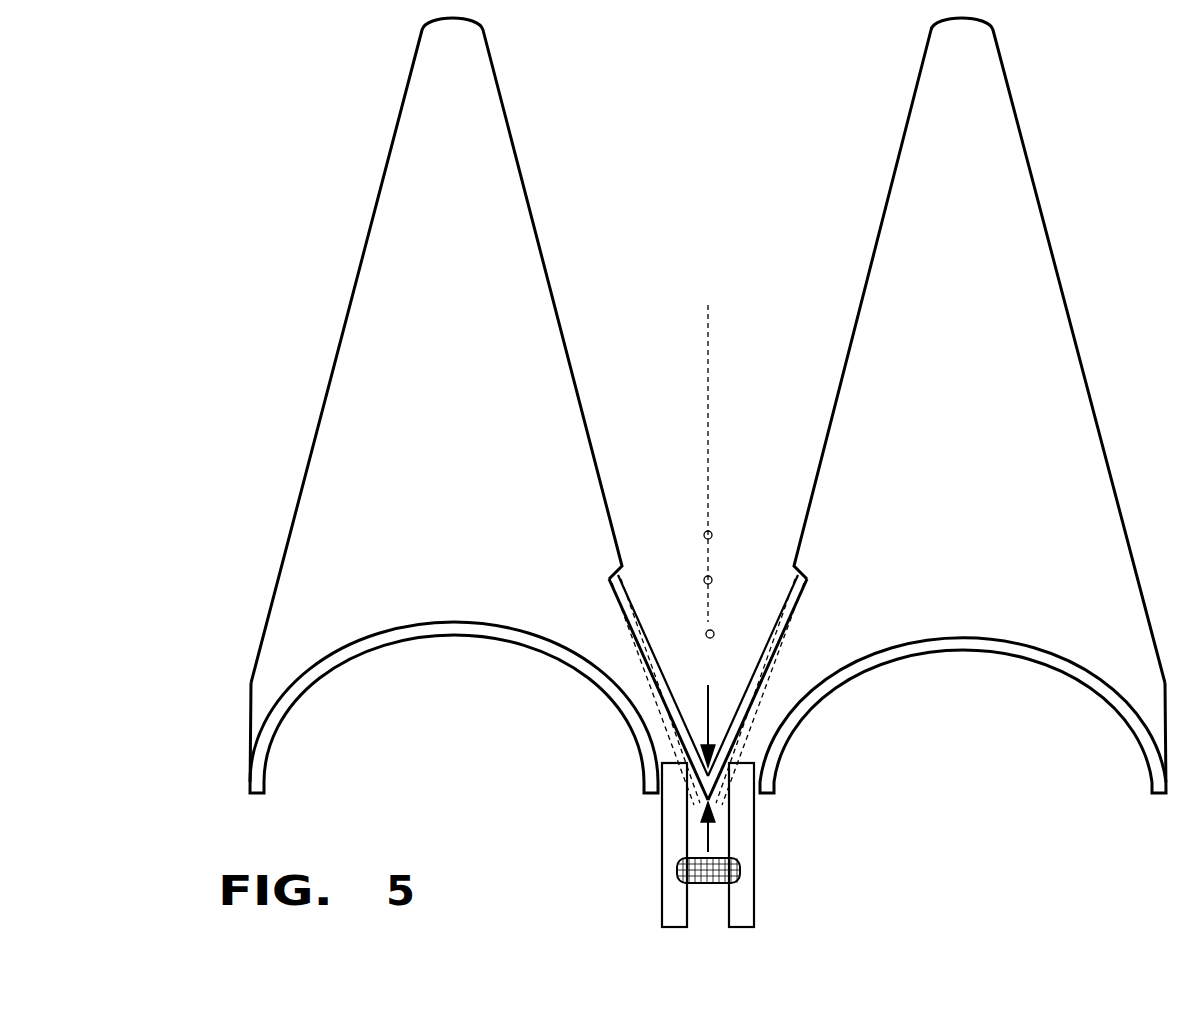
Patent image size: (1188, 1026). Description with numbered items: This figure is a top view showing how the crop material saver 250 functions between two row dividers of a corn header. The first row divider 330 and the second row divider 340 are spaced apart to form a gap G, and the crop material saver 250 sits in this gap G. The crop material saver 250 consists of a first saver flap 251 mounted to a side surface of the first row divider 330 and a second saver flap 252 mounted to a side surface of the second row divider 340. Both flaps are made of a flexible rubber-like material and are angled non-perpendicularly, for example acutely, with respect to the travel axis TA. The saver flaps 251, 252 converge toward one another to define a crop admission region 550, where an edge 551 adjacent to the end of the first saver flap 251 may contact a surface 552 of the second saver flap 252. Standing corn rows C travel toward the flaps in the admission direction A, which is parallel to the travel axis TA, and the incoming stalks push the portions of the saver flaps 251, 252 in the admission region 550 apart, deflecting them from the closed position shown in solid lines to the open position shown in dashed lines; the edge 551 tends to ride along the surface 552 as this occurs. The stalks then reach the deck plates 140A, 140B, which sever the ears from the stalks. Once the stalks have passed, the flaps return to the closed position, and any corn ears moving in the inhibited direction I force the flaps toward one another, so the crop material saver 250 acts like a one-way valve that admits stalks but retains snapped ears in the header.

The second row divider 340 is at (501, 92).
The first row divider 330 is at (917, 83).
The crop material saver 250 is at (757, 697).
The first saver flap 251 is at (818, 680).
The second saver flap 252 is at (650, 668).
The crop admission region 550 is at (703, 777).
The edge 551 is at (720, 787).
The surface 552 is at (648, 690).
The deck plate 140A is at (755, 905).
The deck plate 140B is at (661, 905).
The gap G is at (668, 492).
The travel axis TA is at (708, 413).
The standing corn rows C is at (712, 630).
The admission direction A is at (703, 727).
The inhibited direction I is at (703, 842).